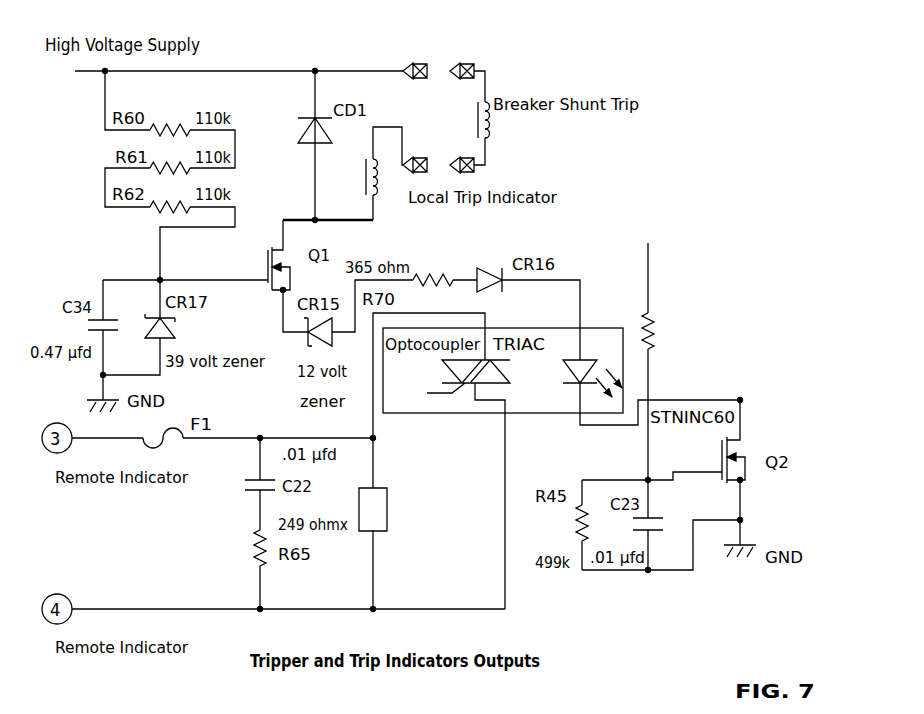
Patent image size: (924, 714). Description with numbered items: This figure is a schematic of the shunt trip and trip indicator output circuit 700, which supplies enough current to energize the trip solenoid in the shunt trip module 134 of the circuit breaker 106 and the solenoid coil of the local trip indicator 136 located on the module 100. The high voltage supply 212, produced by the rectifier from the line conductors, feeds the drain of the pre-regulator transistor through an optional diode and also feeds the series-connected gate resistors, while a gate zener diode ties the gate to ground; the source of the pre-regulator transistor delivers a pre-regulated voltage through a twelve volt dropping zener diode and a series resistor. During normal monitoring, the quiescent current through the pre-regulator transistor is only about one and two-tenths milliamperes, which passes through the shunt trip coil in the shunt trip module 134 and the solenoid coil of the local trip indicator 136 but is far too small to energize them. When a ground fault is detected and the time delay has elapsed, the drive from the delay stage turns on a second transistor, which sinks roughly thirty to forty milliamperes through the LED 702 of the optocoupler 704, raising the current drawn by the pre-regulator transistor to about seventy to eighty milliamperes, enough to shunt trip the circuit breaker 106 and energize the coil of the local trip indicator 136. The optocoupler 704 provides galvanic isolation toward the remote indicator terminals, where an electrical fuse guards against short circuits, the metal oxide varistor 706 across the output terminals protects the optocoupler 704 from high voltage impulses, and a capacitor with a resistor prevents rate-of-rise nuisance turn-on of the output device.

The module 100 is at (371, 46).
The circuit breaker 106 is at (501, 46).
The shunt trip module 134 is at (523, 74).
The local trip indicator 136 is at (378, 197).
The high voltage supply 212 is at (104, 75).
The shunt trip and trip indicator output circuit 700 is at (602, 159).
The LED 702 is at (582, 356).
The optocoupler 704 is at (489, 342).
The metal oxide varistor 706 is at (388, 508).